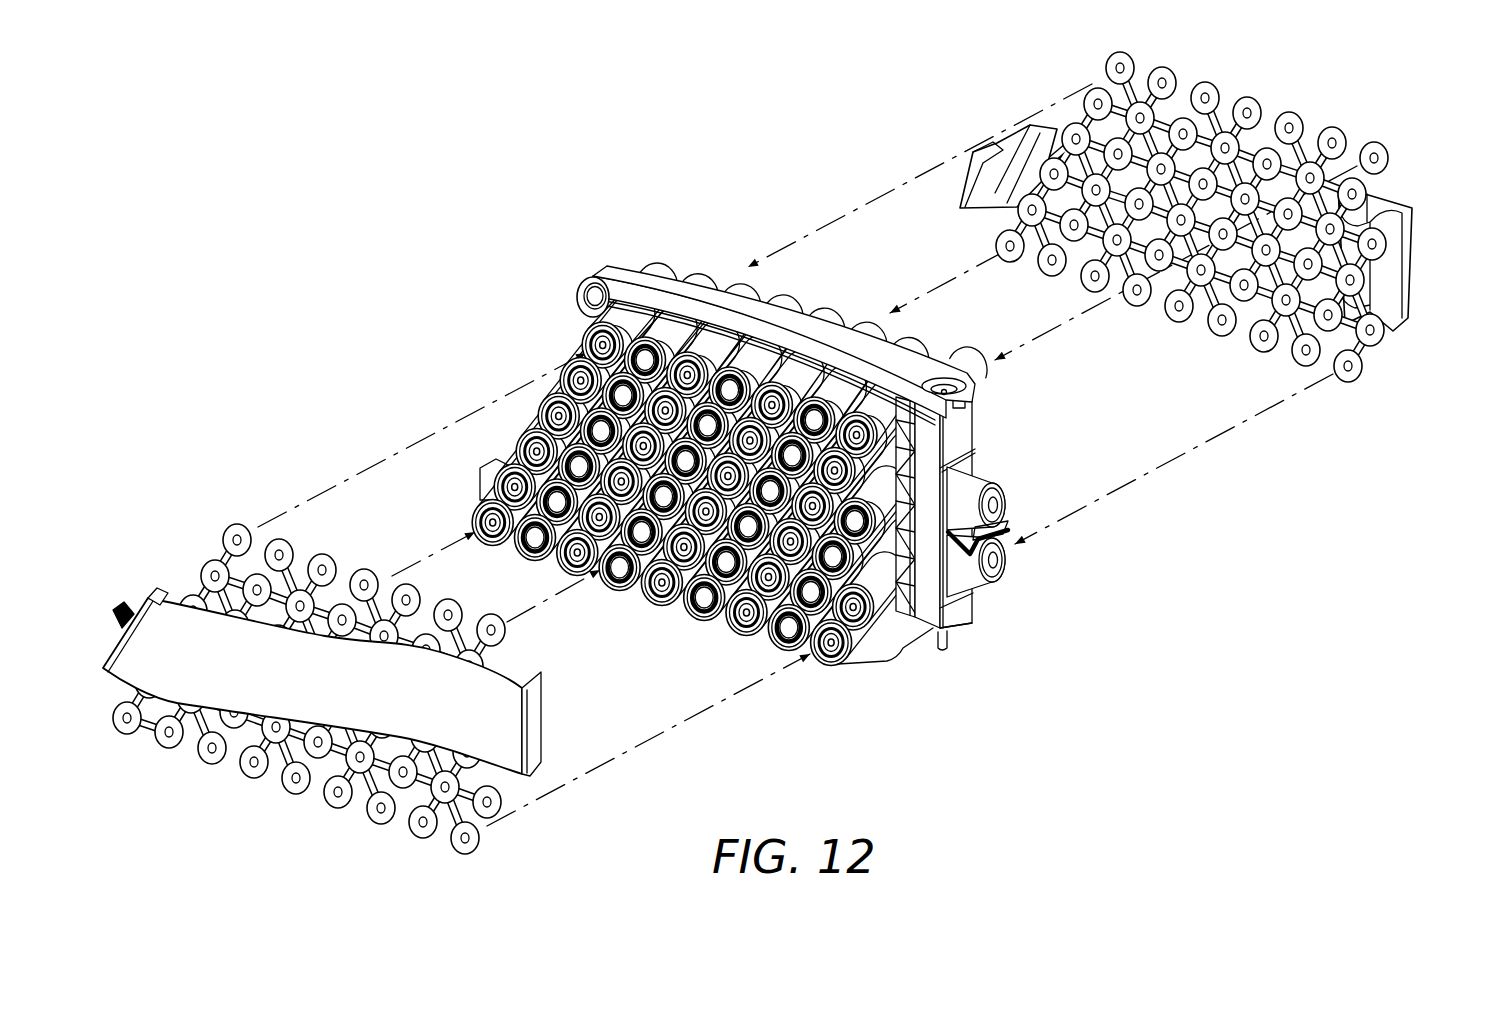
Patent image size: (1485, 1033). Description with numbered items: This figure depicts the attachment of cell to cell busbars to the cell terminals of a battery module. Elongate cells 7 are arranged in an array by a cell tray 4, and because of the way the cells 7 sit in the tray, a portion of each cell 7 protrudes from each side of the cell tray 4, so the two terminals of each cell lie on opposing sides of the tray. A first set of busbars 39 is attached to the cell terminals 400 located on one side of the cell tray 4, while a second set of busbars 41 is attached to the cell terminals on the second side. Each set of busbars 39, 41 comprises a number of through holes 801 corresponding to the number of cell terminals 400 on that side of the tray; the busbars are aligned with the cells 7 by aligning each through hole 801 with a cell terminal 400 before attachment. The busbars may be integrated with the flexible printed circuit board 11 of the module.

The cell tray 4 is at (680, 288).
The cell 7 is at (612, 313).
The flexible printed circuit board 11 is at (156, 618).
The first set of busbars 39 is at (309, 665).
The second set of busbars 41 is at (1207, 88).
The cell terminal 400 is at (838, 664).
The through hole 801 is at (212, 767).